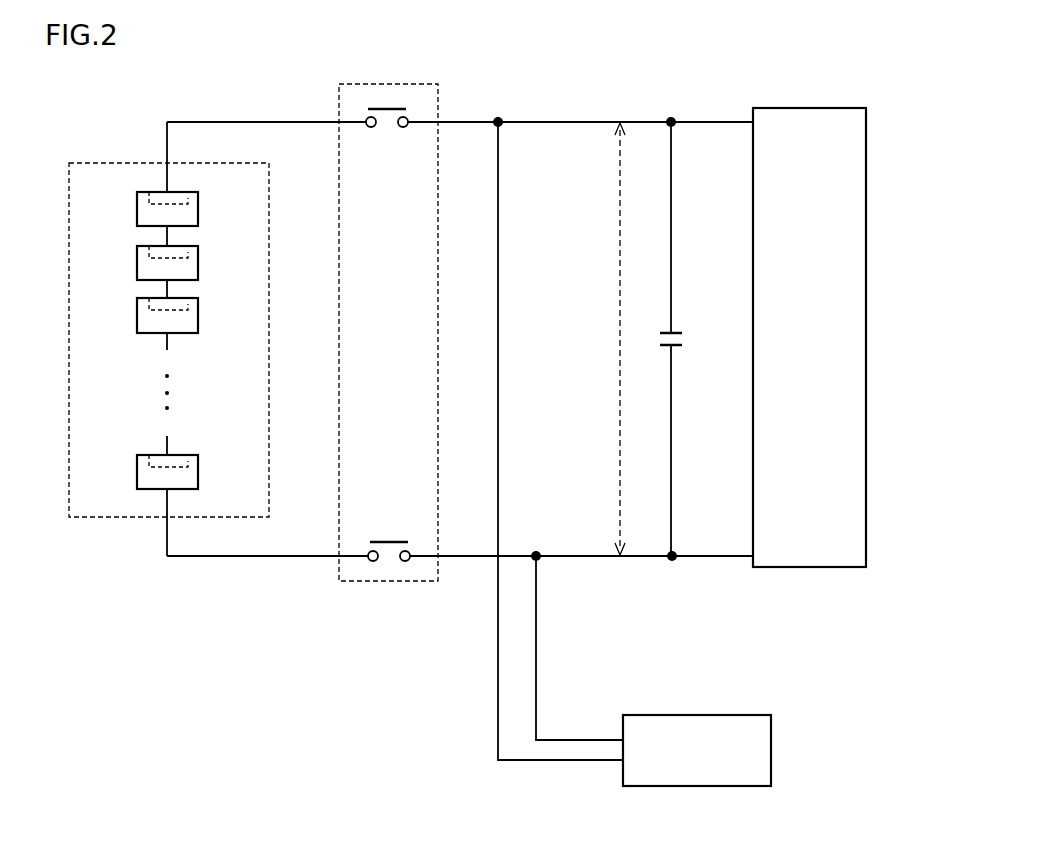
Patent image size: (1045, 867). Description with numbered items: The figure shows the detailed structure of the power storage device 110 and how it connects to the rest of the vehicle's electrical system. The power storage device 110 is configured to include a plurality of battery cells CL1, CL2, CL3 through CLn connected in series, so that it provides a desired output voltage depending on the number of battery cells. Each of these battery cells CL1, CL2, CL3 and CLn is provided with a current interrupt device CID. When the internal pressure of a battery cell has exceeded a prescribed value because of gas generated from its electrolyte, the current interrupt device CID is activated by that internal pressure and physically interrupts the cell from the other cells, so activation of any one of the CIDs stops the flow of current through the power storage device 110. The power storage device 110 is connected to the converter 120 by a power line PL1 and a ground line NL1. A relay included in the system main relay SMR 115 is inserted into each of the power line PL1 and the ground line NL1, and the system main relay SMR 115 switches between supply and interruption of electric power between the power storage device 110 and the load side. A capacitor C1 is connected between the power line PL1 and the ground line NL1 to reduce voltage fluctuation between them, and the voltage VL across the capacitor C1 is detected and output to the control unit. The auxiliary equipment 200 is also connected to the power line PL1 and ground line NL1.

The power storage device 110 is at (169, 312).
The system main relay 115 is at (409, 319).
The converter 120 is at (809, 108).
The auxiliary equipment 200 is at (736, 715).
The battery cell CL1 is at (143, 209).
The battery cell CL2 is at (143, 263).
The battery cell CL3 is at (143, 315).
The battery cell CLn is at (144, 472).
The current interrupt device CID is at (189, 198).
The capacitor C1 is at (682, 339).
The power line PL1 is at (580, 106).
The ground line NL1 is at (585, 572).
The voltage VL is at (606, 339).
The system main relay SMR is at (419, 84).